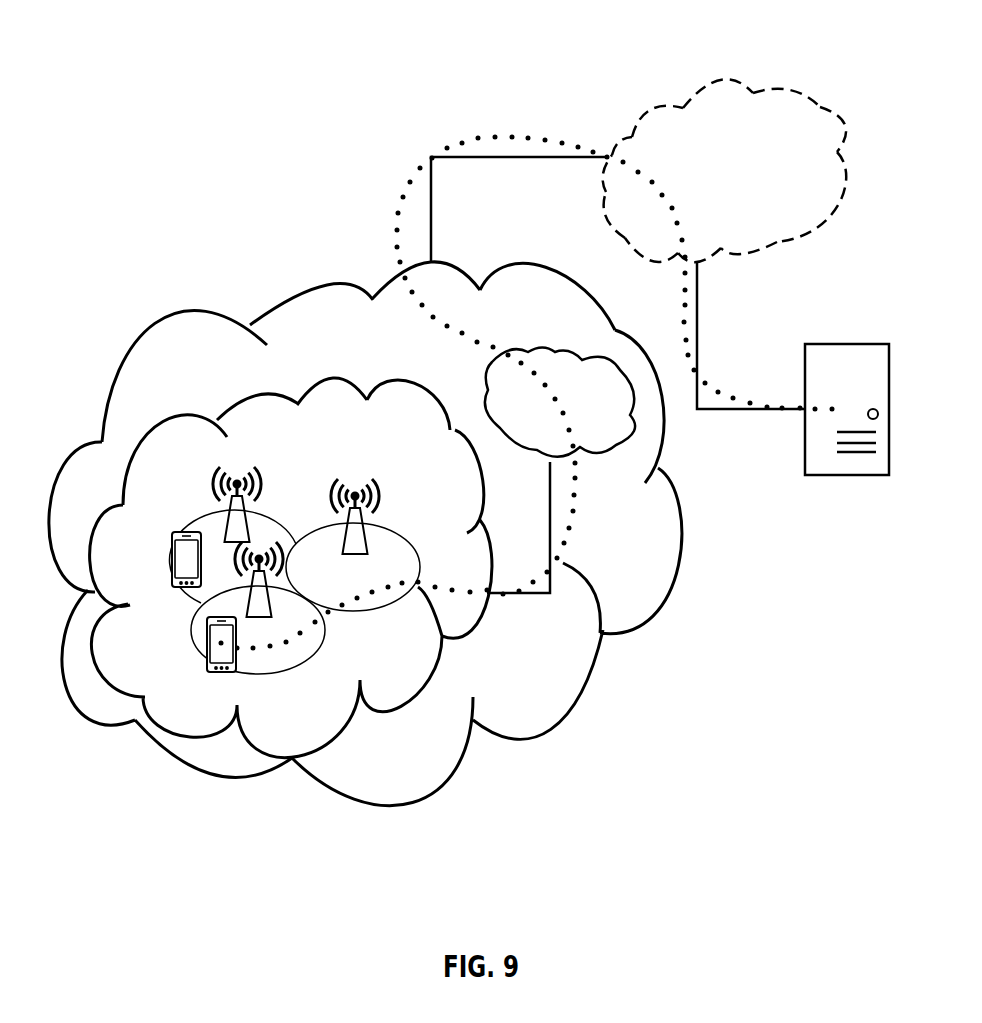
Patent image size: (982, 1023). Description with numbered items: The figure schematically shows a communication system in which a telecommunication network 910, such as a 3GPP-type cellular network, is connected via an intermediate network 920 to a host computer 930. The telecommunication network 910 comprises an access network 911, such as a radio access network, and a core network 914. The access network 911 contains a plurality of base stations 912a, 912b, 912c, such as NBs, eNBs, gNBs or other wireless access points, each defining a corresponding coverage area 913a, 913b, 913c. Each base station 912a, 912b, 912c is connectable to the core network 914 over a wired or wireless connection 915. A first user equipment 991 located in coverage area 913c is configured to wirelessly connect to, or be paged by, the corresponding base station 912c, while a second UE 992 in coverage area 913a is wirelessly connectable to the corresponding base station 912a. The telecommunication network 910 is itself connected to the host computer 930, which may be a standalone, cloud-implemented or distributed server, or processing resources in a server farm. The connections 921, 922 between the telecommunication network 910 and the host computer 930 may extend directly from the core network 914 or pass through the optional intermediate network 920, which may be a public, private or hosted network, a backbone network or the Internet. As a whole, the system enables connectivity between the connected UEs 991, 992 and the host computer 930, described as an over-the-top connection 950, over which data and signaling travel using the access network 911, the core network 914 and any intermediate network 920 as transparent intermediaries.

The telecommunication network 910 is at (347, 331).
The access network 911 is at (299, 443).
The base station 912a is at (270, 613).
The base station 912b is at (382, 500).
The base station 912c is at (213, 485).
The coverage area 913a is at (325, 628).
The coverage area 913b is at (420, 565).
The coverage area 913c is at (170, 530).
The core network 914 is at (594, 413).
The wired or wireless connection 915 is at (553, 505).
The intermediate network 920 is at (707, 181).
The connection 921 is at (513, 157).
The connection 922 is at (757, 411).
The host computer 930 is at (847, 425).
The over-the-top (OTT) connection 950 is at (407, 185).
The first user equipment (UE) 991 is at (173, 587).
The second UE 992 is at (207, 667).